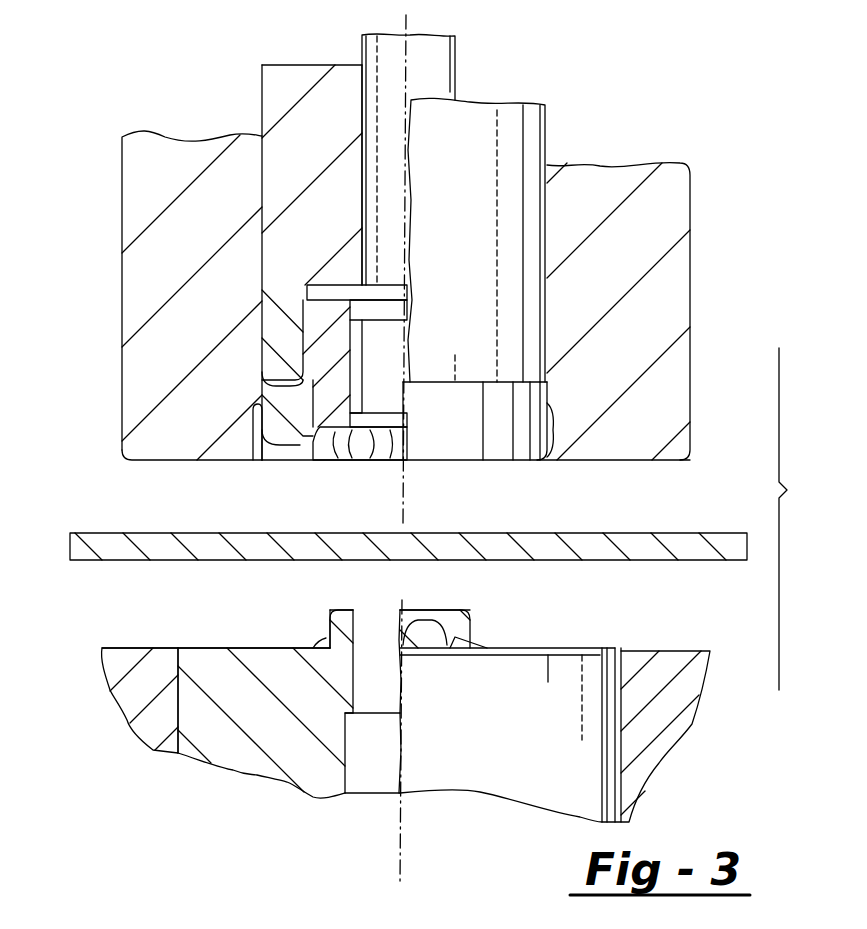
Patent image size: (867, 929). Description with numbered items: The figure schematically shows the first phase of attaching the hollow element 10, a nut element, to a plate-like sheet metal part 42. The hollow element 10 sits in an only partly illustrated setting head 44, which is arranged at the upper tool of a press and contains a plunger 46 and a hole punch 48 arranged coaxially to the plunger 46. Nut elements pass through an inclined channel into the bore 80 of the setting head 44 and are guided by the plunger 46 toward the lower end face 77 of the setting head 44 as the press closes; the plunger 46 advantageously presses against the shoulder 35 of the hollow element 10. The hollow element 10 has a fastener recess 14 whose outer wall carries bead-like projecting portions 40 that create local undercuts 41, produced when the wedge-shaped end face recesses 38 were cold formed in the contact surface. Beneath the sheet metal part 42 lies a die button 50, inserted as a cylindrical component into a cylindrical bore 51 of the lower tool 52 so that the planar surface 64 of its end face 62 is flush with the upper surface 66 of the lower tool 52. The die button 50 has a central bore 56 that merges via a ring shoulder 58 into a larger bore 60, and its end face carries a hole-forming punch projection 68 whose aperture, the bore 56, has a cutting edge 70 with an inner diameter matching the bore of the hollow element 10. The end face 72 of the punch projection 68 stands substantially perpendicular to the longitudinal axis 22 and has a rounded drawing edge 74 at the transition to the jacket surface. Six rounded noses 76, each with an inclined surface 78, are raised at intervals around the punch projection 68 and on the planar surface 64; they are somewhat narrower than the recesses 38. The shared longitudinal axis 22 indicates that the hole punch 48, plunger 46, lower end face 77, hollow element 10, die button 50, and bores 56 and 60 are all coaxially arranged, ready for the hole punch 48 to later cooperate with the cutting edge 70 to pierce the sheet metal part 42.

The hollow element 10 is at (268, 470).
The fastener recess 14 is at (375, 463).
The longitudinal axis 22 is at (405, 517).
The shoulder 35 is at (290, 385).
The end face recesses 38 is at (335, 463).
The projecting portions 40 is at (313, 450).
The undercuts 41 is at (258, 437).
The sheet metal part 42 is at (102, 561).
The setting head 44 is at (690, 305).
The plunger 46 is at (547, 137).
The hole punch 48 is at (455, 63).
The die button 50 is at (260, 772).
The cylindrical bore 51 is at (607, 735).
The lower tool 52 is at (127, 720).
The central bore 56 is at (353, 684).
The ring shoulder 58 is at (301, 788).
The larger bore 60 is at (347, 753).
The end face 62 is at (225, 648).
The planar surface 64 is at (200, 648).
The upper surface 66 is at (125, 648).
The hole-forming punch projection 68 is at (326, 632).
The cutting edge 70 is at (367, 610).
The end face 72 is at (340, 610).
The rounded drawing edge 74 is at (452, 646).
The noses 76 is at (420, 621).
The lower end face 77 is at (170, 462).
The inclined surface 78 is at (333, 645).
The bore 80 is at (375, 212).